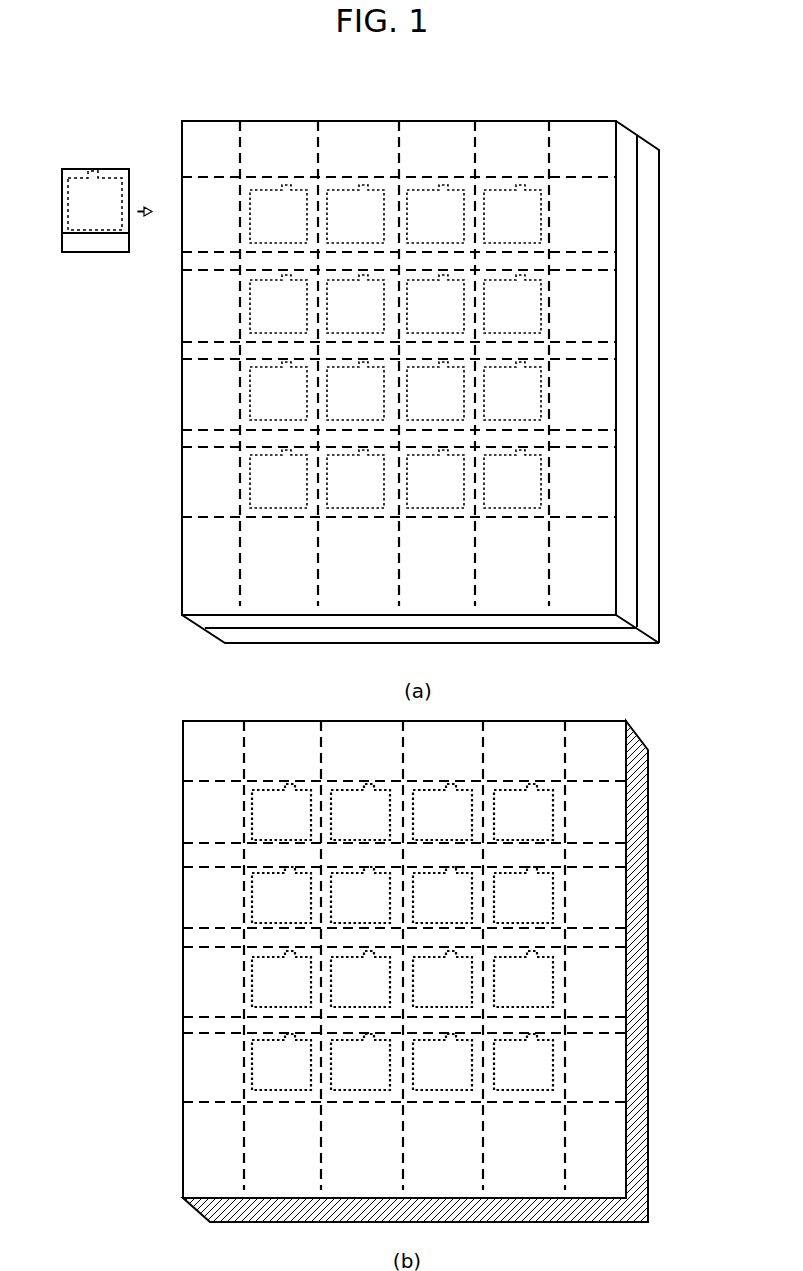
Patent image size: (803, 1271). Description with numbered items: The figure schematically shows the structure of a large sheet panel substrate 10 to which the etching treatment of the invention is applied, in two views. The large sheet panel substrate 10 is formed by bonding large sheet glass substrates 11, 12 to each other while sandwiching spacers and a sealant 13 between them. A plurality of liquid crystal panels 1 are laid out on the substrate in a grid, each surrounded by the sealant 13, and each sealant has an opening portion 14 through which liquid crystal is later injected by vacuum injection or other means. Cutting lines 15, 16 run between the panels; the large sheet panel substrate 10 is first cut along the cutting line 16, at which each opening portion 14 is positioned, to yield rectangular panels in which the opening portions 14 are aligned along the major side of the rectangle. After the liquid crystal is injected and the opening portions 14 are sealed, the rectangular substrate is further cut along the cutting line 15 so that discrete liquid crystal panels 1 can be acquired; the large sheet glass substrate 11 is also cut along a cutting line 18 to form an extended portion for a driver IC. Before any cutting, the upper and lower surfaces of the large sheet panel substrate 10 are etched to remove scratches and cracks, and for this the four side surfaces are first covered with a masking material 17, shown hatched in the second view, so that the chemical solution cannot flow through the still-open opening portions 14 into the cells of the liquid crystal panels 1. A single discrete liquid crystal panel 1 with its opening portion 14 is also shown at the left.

The liquid crystal panel 1 is at (53, 158).
The large sheet panel substrate 10 is at (356, 112).
The large sheet glass substrate 11 is at (608, 620).
The large sheet glass substrate 12 is at (648, 546).
The sealant 13 is at (255, 190).
The opening portion 14 is at (91, 172).
The cutting line 15 is at (474, 222).
The cutting line 16 is at (517, 277).
The masking material 17 is at (648, 878).
The cutting line 18 is at (532, 252).